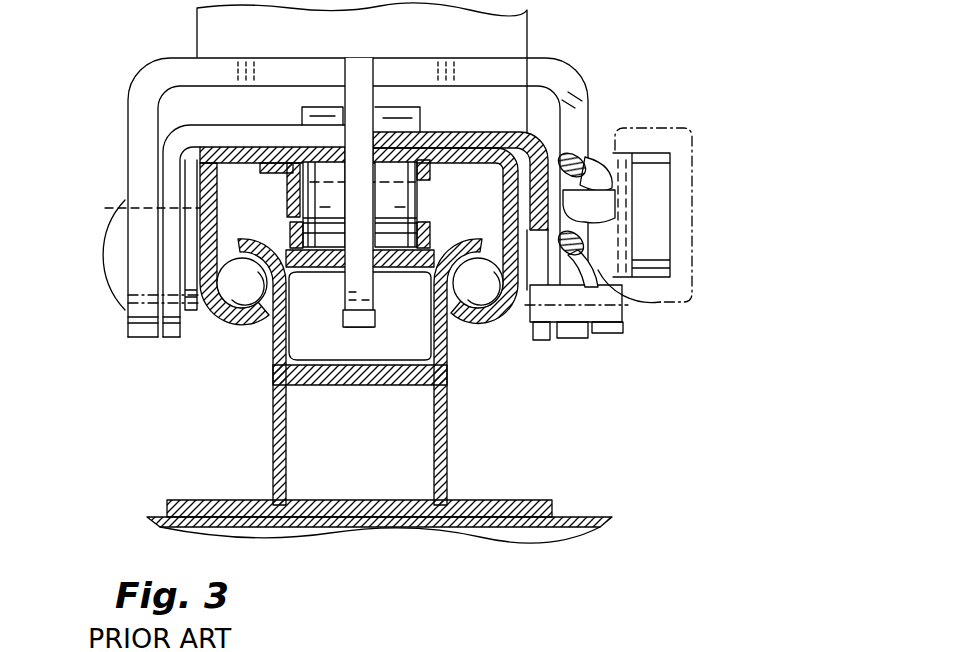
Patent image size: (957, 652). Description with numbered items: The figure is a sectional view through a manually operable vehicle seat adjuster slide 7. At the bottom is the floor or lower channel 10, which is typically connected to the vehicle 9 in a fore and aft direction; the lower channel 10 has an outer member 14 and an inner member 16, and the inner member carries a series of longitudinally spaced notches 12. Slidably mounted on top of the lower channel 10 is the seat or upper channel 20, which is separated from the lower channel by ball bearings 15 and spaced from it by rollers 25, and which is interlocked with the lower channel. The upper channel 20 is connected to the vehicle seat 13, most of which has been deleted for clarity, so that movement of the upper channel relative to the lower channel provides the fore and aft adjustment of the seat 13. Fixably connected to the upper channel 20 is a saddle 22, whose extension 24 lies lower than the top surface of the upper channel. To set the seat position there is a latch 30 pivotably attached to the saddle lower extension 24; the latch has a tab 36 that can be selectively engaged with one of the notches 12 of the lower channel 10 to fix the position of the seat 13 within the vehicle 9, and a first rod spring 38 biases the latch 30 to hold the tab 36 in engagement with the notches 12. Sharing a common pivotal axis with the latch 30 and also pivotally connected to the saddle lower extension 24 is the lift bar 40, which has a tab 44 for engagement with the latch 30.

The vehicle seat adjuster slide 7 is at (217, 115).
The vehicle 9 is at (572, 513).
The lower channel 10 is at (448, 334).
The notches 12 is at (320, 217).
The vehicle seat 13 is at (530, 30).
The outer member 14 is at (445, 362).
The ball bearings 15 is at (462, 290).
The inner member 16 is at (303, 307).
The upper channel 20 is at (240, 157).
The saddle 22 is at (175, 143).
The extension 24 is at (542, 343).
The rollers 25 is at (393, 200).
The latch 30 is at (560, 72).
The tab 36 is at (360, 330).
The first rod spring 38 is at (593, 165).
The lift bar 40 is at (660, 225).
The tab 44 is at (590, 300).